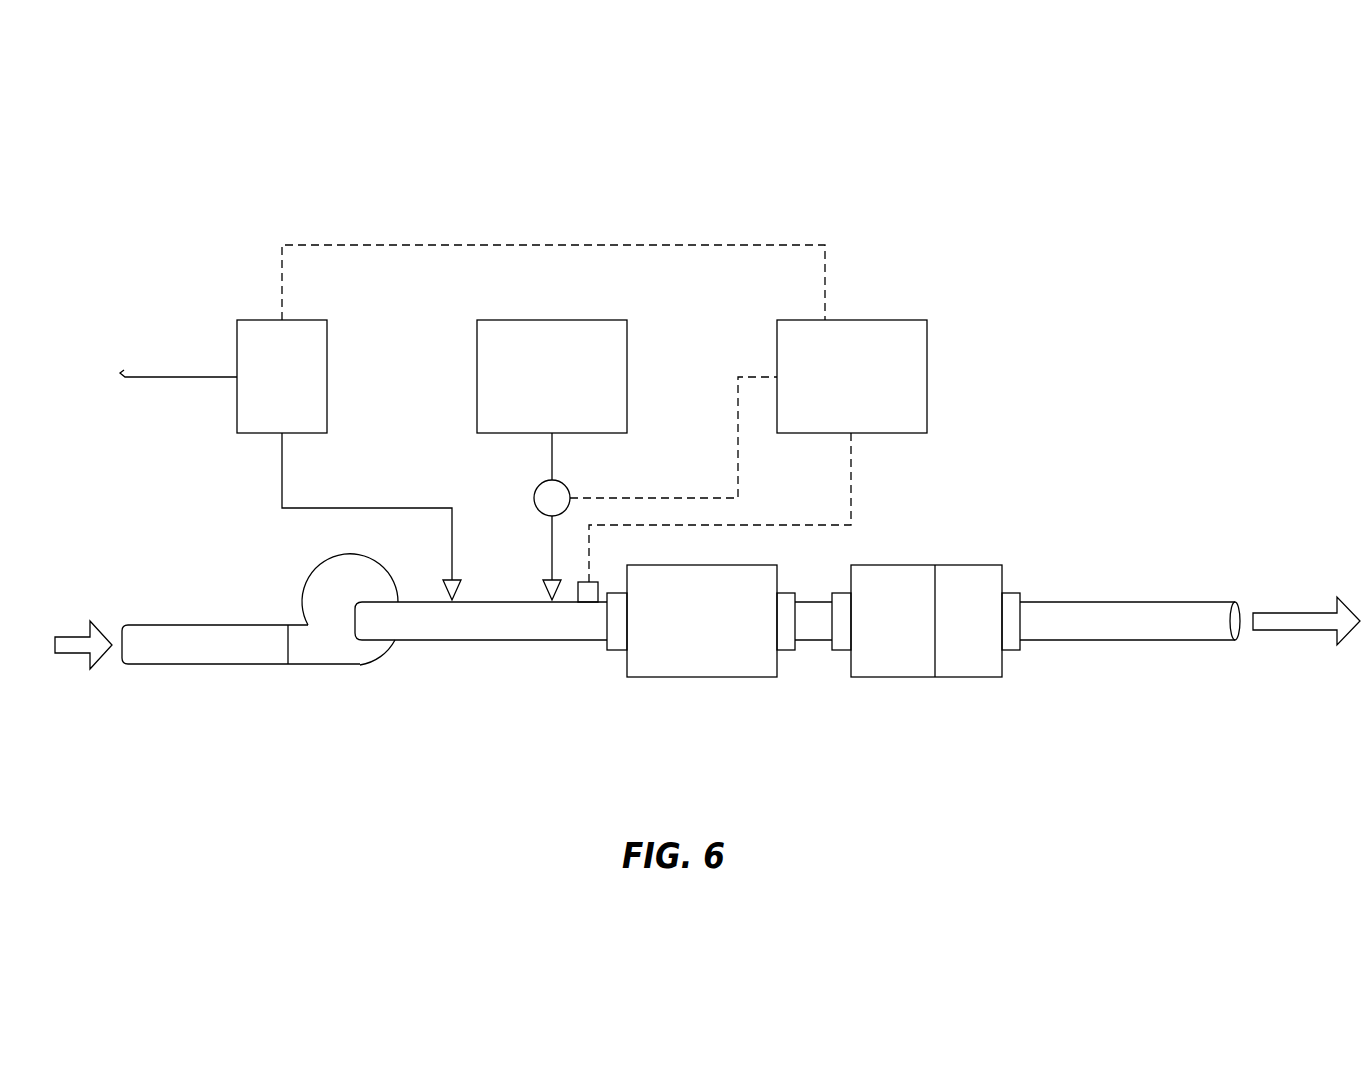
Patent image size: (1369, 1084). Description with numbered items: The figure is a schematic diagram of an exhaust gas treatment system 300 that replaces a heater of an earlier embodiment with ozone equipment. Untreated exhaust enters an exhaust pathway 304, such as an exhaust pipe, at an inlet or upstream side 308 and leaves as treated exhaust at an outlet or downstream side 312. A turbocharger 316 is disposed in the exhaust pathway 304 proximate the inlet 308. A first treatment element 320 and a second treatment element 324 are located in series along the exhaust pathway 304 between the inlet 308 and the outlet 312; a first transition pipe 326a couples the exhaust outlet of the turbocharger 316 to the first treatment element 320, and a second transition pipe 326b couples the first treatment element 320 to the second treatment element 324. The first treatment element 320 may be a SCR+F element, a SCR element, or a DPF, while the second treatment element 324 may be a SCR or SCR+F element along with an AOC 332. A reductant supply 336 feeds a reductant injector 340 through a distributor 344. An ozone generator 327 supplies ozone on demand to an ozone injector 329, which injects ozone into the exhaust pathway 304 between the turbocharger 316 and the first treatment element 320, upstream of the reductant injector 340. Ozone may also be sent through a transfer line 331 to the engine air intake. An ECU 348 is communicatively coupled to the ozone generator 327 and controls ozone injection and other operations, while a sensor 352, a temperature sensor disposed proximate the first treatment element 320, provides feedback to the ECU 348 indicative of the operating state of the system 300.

The exhaust gas treatment system 300 is at (416, 176).
The exhaust pathway 304 is at (192, 695).
The inlet or upstream side 308 is at (118, 640).
The outlet or downstream side 312 is at (1242, 607).
The turbocharger 316 is at (315, 590).
The first treatment element 320 is at (700, 677).
The second treatment element 324 is at (893, 565).
The first transition pipe 326a is at (495, 642).
The second transition pipe 326b is at (817, 642).
The ozone generator 327 is at (255, 318).
The ozone injector 329 is at (447, 583).
The transfer line 331 is at (193, 378).
The AOC 332 is at (967, 678).
The reductant supply 336 is at (477, 376).
The reductant injector 340 is at (547, 583).
The distributor 344 is at (540, 484).
The ECU 348 is at (927, 377).
The sensor 352 is at (582, 602).